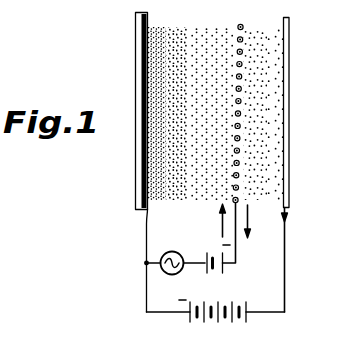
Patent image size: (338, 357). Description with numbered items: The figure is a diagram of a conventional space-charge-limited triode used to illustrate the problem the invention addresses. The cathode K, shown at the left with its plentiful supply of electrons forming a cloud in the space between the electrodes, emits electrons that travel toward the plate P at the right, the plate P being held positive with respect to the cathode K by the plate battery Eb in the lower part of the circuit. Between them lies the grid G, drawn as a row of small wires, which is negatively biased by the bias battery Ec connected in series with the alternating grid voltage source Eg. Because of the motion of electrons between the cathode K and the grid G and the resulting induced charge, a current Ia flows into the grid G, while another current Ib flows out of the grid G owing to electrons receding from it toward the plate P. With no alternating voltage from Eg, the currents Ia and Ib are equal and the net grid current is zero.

The cathode K is at (136, 50).
The grid G is at (241, 24).
The plate P is at (290, 22).
The current flowing into the grid Ia is at (218, 218).
The current flowing out of the grid Ib is at (250, 218).
The alternating grid voltage source Eg is at (172, 275).
The grid bias battery Ec is at (222, 275).
The plate battery Eb is at (212, 327).